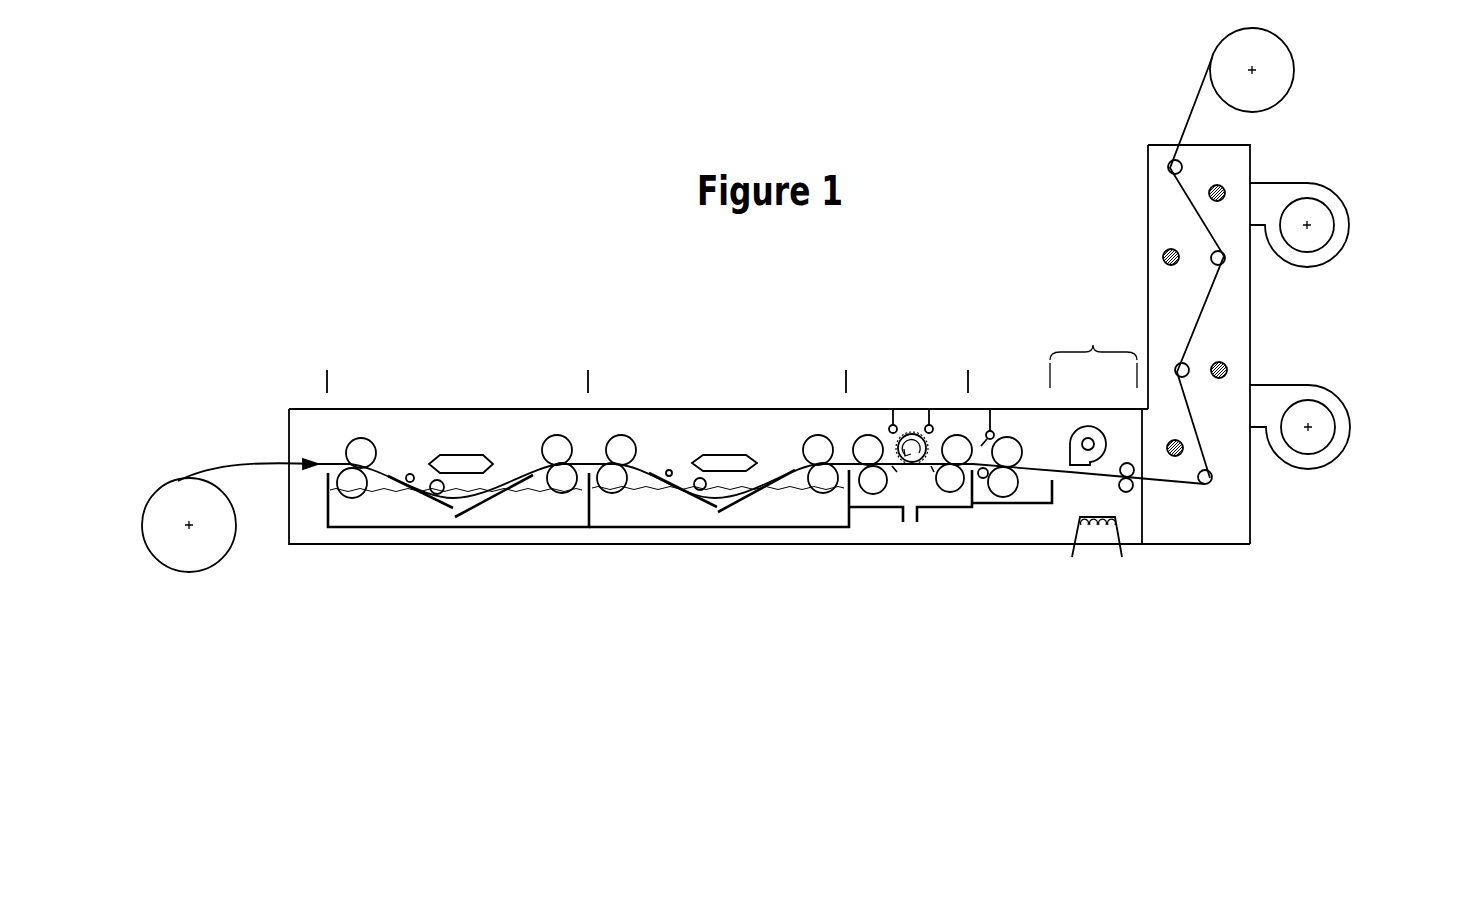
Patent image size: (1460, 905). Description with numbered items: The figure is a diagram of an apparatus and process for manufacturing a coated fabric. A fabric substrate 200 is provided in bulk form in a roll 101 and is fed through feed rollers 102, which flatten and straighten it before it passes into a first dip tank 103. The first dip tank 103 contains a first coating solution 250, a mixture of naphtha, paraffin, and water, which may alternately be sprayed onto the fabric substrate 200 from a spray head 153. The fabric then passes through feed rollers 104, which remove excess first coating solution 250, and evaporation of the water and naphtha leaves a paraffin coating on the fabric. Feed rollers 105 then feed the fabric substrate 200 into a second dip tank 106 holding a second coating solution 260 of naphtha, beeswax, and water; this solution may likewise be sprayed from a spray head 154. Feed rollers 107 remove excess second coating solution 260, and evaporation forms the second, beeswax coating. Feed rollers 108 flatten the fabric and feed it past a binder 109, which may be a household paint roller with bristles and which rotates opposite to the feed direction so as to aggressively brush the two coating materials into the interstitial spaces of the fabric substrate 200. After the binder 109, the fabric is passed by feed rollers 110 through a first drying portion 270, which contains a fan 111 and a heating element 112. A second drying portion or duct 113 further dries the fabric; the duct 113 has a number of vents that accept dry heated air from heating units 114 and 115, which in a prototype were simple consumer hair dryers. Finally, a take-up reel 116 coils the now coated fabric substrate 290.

The roll 101 is at (215, 560).
The fabric substrate 200 is at (234, 469).
The feed rollers 102 is at (350, 498).
The first dip tank 103 is at (425, 533).
The first coating solution 250 is at (418, 505).
The spray head 153 is at (463, 455).
The feed rollers 104 is at (563, 493).
The feed rollers 105 is at (615, 493).
The second dip tank 106 is at (710, 530).
The second coating solution 260 is at (772, 513).
The spray head 154 is at (720, 455).
The feed rollers 107 is at (823, 493).
The feed rollers 108 is at (873, 496).
The binder 109 is at (910, 470).
The feed rollers 110 is at (958, 493).
The fan 111 is at (1088, 426).
The first drying portion 270 is at (1093, 354).
The heating element 112 is at (1100, 545).
The duct 113 is at (1197, 545).
The coated fabric substrate 290 is at (1192, 102).
The take-up reel 116 is at (1293, 75).
The heating unit 115 is at (1353, 230).
The heating unit 114 is at (1353, 428).